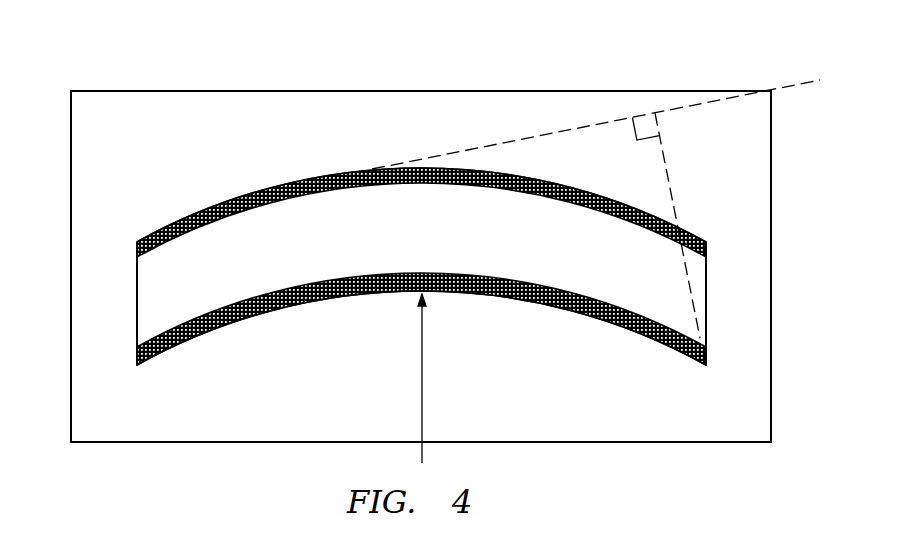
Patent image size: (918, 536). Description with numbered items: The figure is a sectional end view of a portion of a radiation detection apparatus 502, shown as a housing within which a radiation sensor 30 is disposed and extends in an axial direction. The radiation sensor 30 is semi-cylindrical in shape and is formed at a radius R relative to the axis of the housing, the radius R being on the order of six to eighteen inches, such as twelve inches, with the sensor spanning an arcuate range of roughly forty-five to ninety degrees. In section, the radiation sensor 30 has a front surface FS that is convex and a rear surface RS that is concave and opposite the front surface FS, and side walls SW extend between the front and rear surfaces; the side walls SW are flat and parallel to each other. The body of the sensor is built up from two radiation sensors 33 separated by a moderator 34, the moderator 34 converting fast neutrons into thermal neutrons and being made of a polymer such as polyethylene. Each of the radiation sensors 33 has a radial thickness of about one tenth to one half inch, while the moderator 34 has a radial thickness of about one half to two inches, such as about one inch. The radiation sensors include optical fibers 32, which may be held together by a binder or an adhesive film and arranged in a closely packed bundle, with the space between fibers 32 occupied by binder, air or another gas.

The radiation detection apparatus 502 is at (128, 90).
The radiation sensor 30 is at (419, 257).
The optical fibers 32 is at (228, 203).
The radiation sensors 33 is at (573, 293).
The moderator 34 is at (235, 296).
The front surface FS is at (482, 168).
The rear surface RS is at (481, 297).
The side walls SW is at (137, 298).
The radius R is at (429, 378).